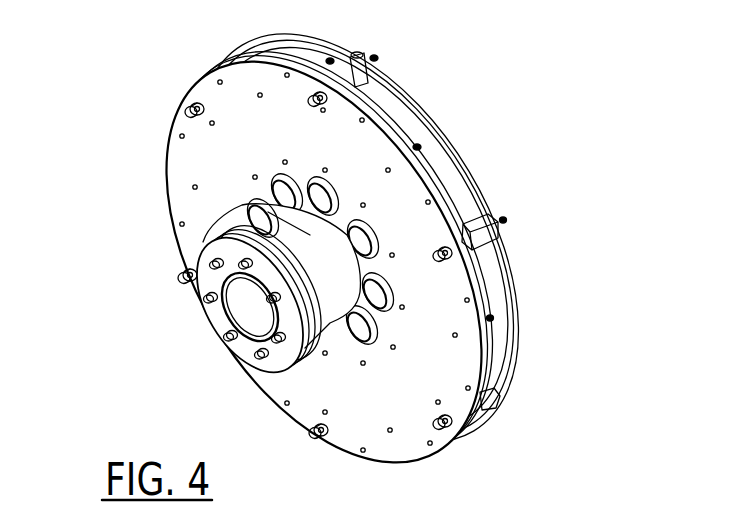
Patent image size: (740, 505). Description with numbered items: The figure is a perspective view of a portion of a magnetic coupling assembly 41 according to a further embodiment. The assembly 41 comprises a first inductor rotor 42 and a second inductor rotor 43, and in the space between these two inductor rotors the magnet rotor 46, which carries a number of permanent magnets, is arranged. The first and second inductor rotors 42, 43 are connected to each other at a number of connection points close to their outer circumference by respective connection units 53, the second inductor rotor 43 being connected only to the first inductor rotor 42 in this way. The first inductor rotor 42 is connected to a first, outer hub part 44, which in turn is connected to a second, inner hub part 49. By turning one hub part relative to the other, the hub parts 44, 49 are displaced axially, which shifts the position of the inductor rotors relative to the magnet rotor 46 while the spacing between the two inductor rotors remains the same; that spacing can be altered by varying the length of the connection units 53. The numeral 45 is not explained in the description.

The magnetic coupling assembly 41 is at (341, 252).
The first inductor rotor 42 is at (188, 160).
The second inductor rotor 43 is at (362, 55).
The first hub part 44 is at (226, 220).
The band 45 is at (342, 38).
The magnet rotor 46 is at (488, 181).
The second hub part 49 is at (242, 309).
The connection units 53 is at (485, 250).